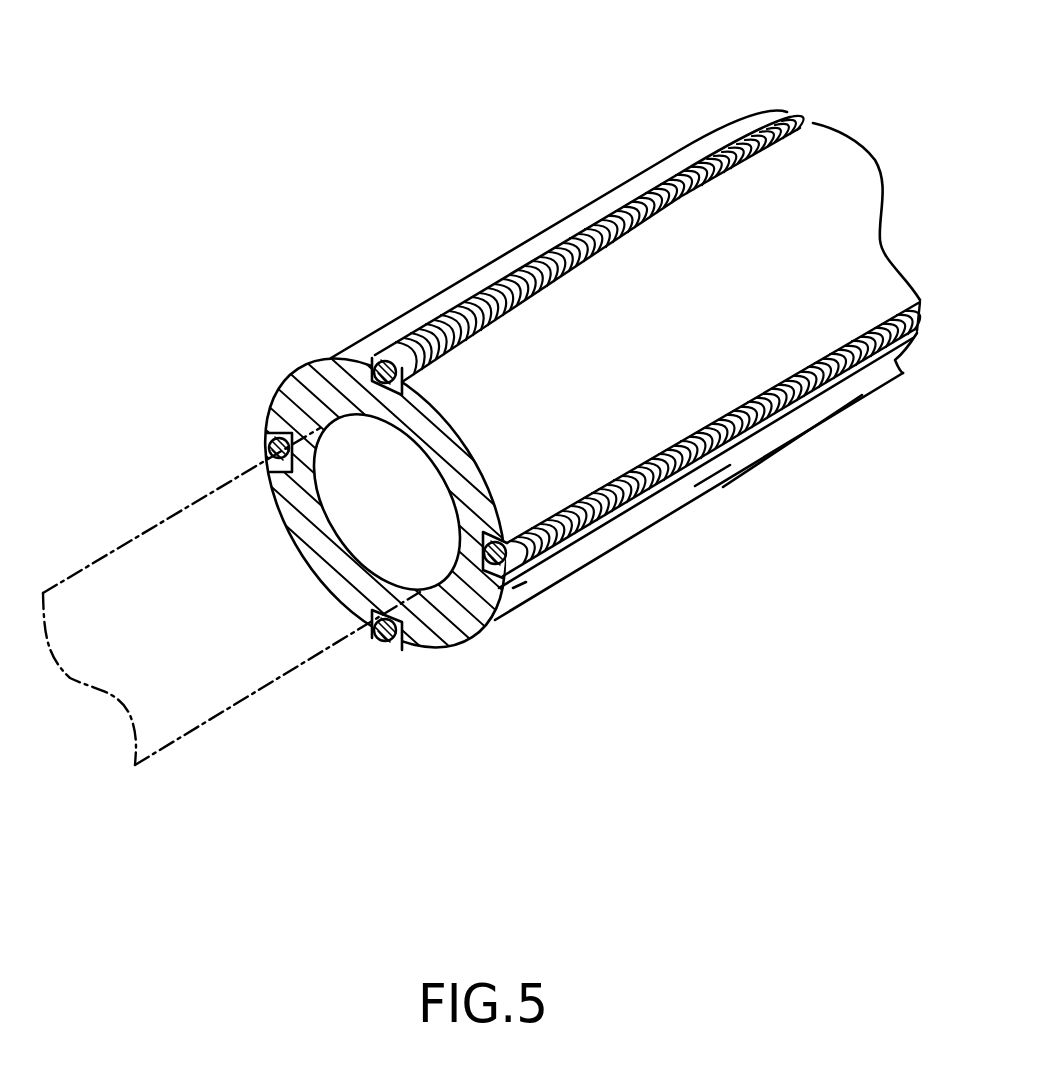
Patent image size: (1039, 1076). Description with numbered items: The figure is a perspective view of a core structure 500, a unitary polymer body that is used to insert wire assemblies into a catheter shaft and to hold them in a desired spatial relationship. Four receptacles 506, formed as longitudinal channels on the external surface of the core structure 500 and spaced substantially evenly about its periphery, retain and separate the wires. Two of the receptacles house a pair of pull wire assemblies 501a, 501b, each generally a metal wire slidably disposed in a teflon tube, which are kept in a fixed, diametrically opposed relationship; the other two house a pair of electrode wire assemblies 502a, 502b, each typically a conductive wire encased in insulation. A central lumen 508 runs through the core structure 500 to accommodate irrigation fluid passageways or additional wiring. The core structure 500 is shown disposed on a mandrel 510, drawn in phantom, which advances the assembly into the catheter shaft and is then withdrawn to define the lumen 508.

The core structure 500 is at (747, 202).
The pull wire assembly 501a is at (555, 535).
The pull wire assembly 501b is at (265, 443).
The electrode wire assembly 502a is at (404, 355).
The electrode wire assembly 502b is at (392, 640).
The receptacle 506 is at (385, 357).
The central lumen 508 is at (410, 465).
The mandrel 510 is at (215, 702).